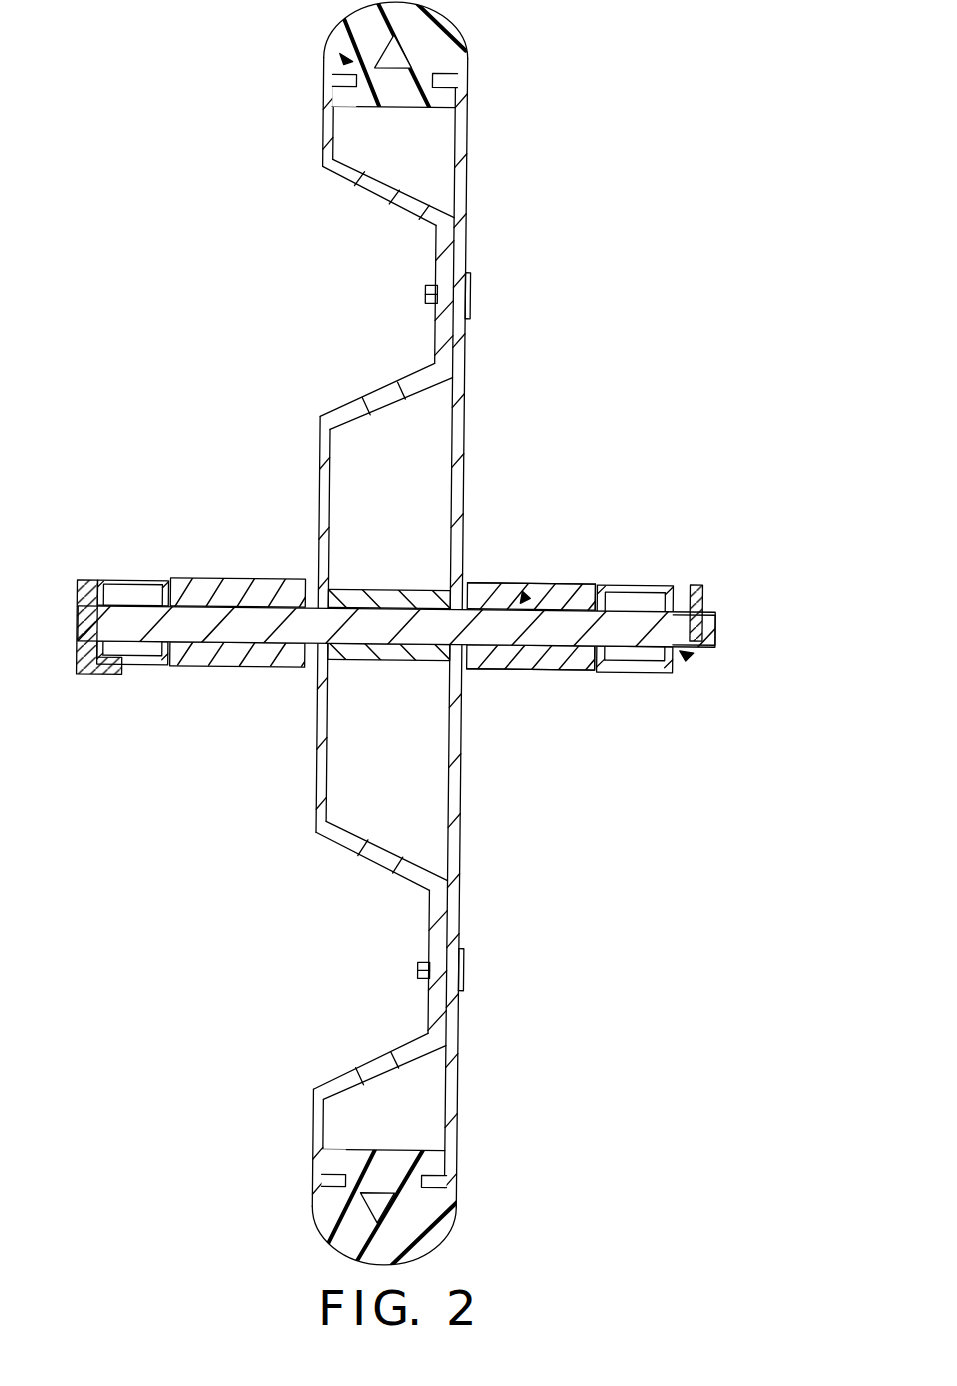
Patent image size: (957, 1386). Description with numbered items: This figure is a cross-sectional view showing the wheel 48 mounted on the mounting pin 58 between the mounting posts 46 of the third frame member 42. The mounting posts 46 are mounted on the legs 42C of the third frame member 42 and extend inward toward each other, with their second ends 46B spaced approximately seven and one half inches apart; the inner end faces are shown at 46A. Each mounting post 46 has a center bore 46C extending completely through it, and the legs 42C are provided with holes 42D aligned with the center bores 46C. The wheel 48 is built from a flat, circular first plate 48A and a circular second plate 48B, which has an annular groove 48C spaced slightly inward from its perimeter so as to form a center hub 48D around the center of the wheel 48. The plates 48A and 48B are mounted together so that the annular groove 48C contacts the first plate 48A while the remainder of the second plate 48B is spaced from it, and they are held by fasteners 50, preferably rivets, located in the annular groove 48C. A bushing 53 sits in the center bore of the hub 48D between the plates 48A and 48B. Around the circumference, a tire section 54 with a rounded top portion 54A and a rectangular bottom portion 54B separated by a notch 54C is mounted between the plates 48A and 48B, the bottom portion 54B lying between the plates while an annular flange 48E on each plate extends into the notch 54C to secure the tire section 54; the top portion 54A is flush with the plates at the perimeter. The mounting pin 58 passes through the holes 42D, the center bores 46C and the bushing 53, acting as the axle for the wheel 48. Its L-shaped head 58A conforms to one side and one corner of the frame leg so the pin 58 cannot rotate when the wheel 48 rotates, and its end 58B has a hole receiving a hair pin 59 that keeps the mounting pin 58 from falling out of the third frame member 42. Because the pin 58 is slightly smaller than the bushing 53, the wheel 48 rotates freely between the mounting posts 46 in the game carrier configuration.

The third frame member 42 is at (128, 583).
The legs 42C is at (148, 663).
The holes 42D is at (690, 654).
The mounting posts 46 is at (578, 582).
The hub end face 46A is at (590, 668).
The second ends 46B is at (470, 670).
The center bore 46C is at (524, 594).
The wheel 48 is at (460, 410).
The first plate 48A is at (462, 145).
The second plate 48B is at (317, 155).
The annular groove 48C is at (436, 255).
The center hub 48D is at (316, 455).
The annular flange 48E is at (439, 73).
The fasteners 50 is at (467, 293).
The bushing 53 is at (430, 598).
The tire section 54 is at (441, 22).
The rounded top portion 54A is at (344, 23).
The rectangular bottom portion 54B is at (327, 98).
The notch 54C is at (338, 58).
The mounting pin 58 is at (610, 633).
The head 58A is at (82, 673).
The end 58B is at (718, 625).
The hair pin 59 is at (700, 594).